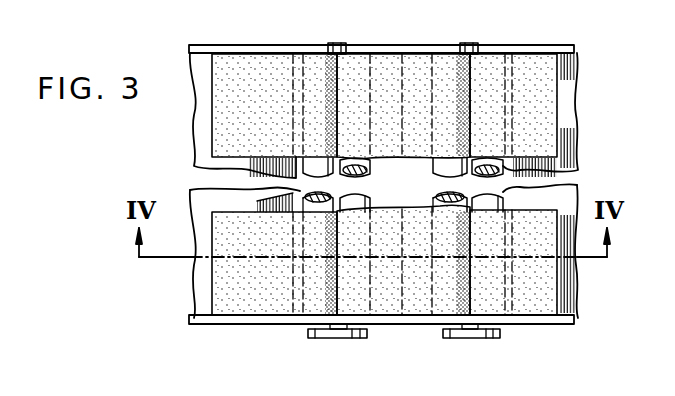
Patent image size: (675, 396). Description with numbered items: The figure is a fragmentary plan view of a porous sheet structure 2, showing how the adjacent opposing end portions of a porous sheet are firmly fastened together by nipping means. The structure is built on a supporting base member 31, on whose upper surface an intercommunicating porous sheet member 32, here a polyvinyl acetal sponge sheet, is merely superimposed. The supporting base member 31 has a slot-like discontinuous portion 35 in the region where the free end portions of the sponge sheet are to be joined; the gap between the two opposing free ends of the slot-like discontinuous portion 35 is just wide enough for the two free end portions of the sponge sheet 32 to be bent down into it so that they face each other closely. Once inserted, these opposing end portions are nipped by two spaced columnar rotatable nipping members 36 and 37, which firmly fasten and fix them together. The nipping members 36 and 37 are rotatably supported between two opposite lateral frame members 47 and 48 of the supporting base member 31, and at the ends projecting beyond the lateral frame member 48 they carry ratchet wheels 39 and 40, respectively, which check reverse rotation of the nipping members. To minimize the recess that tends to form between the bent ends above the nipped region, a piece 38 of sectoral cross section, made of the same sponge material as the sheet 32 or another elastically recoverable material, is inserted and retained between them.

The porous sheet structure 2 is at (262, 308).
The supporting base member 31 is at (200, 148).
The intercommunicating porous sheet member 32 is at (245, 65).
The slot-like discontinuous portion 35 is at (386, 199).
The columnar rotatable nipping member 36 is at (384, 166).
The columnar rotatable nipping member 37 is at (436, 195).
The sectoral piece 38 is at (407, 65).
The ratchet wheel 39 is at (343, 338).
The ratchet wheel 40 is at (470, 338).
The lateral frame member 47 is at (574, 48).
The lateral frame member 48 is at (545, 321).